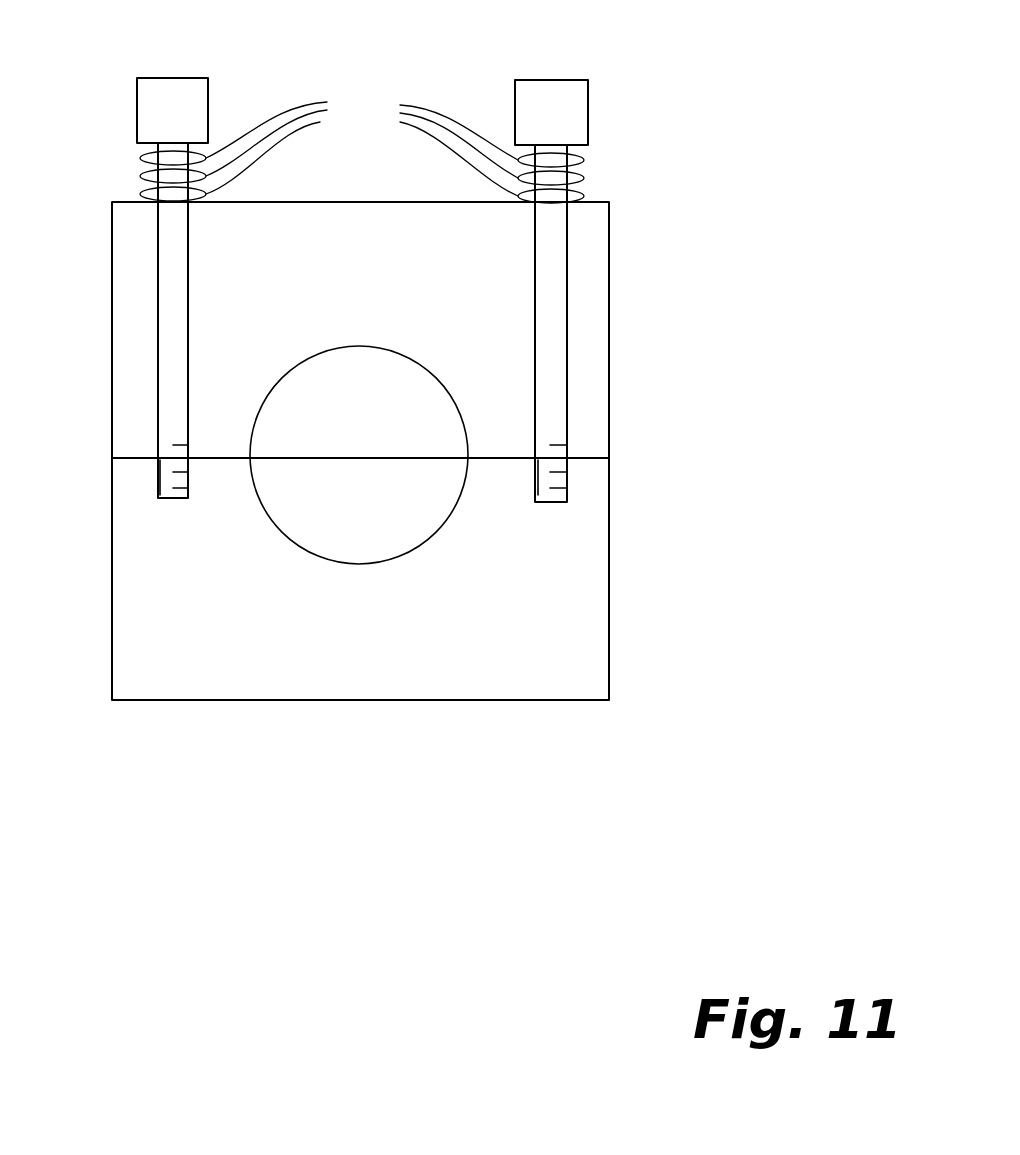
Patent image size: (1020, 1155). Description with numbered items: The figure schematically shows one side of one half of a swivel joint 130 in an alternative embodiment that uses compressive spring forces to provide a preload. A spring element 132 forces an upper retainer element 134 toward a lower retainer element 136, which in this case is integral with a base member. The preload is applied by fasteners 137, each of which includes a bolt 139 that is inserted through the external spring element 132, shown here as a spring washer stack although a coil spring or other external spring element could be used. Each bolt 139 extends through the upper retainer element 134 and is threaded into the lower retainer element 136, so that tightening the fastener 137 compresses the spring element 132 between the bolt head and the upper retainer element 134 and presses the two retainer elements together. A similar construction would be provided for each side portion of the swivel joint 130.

The swivel joint 130 is at (765, 131).
The spring element 132 is at (362, 147).
The upper retainer element 134 is at (609, 330).
The lower retainer element 136 is at (609, 565).
The fastener 137 is at (171, 76).
The bolt 139 is at (156, 270).